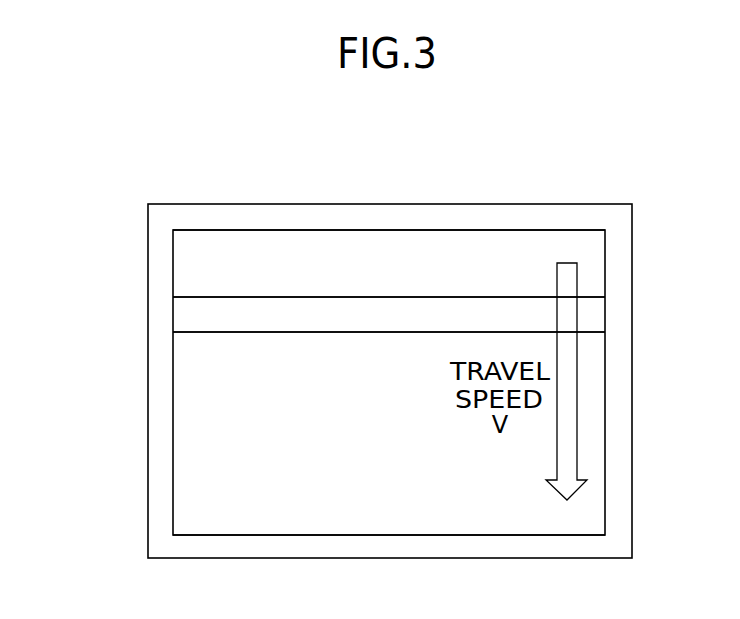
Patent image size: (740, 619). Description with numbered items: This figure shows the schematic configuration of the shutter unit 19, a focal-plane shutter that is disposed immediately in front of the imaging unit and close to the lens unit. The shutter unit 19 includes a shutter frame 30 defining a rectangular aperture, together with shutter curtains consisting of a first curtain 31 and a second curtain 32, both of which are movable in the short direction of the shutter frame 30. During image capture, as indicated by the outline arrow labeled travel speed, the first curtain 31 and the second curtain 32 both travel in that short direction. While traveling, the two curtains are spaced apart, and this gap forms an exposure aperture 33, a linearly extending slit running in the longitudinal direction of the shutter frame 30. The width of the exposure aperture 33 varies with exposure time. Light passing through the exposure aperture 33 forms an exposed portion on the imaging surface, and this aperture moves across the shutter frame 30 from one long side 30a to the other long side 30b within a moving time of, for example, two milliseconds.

The shutter unit 19 is at (380, 197).
The shutter frame 30 is at (181, 508).
The long side 30a is at (478, 231).
The another long side 30b is at (472, 535).
The first curtain 31 is at (200, 408).
The second curtain 32 is at (200, 255).
The exposure aperture 33 is at (403, 324).